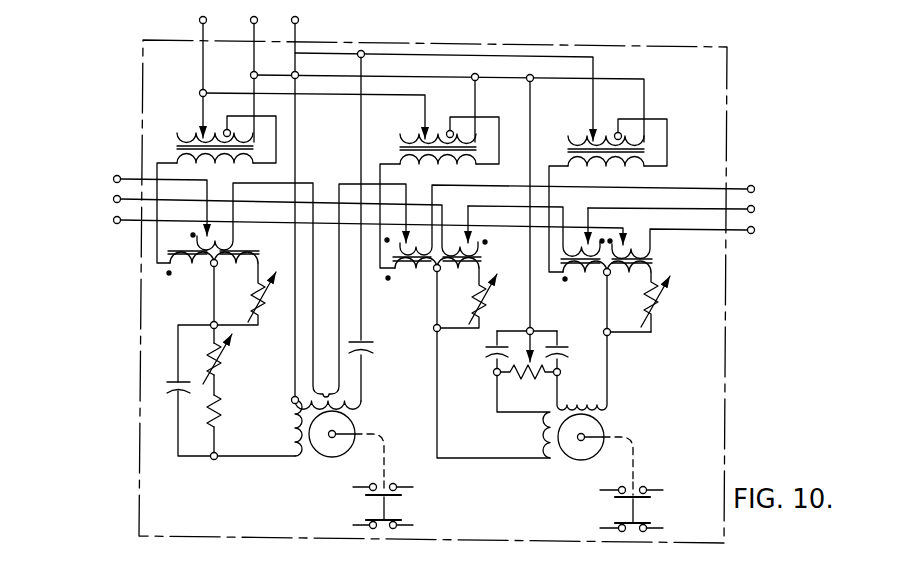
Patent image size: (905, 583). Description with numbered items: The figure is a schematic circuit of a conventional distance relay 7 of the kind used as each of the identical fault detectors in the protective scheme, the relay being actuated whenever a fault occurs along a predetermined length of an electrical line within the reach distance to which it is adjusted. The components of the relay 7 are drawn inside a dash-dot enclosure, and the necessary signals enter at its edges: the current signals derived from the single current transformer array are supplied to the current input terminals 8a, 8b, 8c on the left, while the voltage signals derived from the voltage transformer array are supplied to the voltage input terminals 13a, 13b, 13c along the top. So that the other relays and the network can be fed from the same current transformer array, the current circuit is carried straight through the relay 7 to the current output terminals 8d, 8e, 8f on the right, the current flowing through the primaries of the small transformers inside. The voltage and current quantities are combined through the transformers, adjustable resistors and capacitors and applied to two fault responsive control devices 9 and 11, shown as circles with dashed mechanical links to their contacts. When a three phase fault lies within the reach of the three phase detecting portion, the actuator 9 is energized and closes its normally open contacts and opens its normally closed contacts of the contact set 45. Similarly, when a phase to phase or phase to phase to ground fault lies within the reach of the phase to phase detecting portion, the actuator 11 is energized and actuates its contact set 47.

The distance relay 7 is at (728, 132).
The voltage input terminal 13a is at (208, 5).
The voltage input terminal 13b is at (259, 5).
The voltage input terminal 13c is at (300, 5).
The current input terminal 8a is at (113, 180).
The current input terminal 8b is at (113, 200).
The current input terminal 8c is at (113, 221).
The current output terminal 8d is at (755, 188).
The current output terminal 8e is at (755, 208).
The current output terminal 8f is at (755, 229).
The fault responsive control device 9 is at (330, 458).
The fault responsive control device 11 is at (578, 461).
The contact set 45 is at (401, 503).
The contact set 47 is at (651, 506).